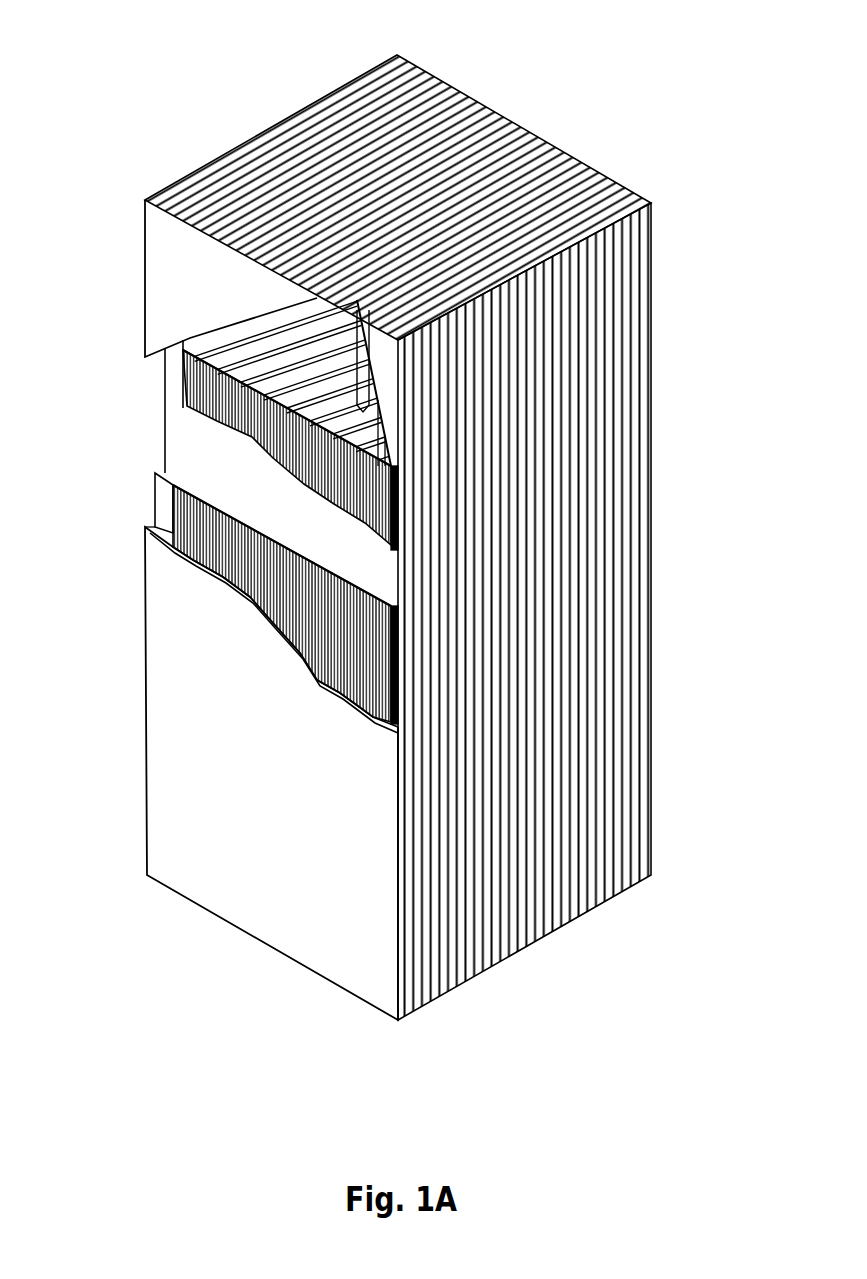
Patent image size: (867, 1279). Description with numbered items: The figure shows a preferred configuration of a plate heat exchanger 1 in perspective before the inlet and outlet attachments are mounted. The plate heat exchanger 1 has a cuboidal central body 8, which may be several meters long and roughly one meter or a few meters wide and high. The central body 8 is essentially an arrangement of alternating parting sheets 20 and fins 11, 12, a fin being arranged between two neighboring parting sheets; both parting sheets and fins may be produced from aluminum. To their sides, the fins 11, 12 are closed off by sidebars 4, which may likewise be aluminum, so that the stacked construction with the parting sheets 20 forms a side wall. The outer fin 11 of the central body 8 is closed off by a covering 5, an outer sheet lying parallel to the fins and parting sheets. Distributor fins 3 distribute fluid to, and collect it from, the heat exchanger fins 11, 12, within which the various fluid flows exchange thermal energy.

The plate heat exchanger 1 is at (610, 62).
The central body 8 is at (322, 97).
The distributor fins 3 is at (190, 339).
The fin 12 is at (276, 413).
The parting sheet 20 is at (222, 460).
The fin 11 is at (245, 548).
The sidebar 4 is at (400, 500).
The covering 5 is at (238, 768).